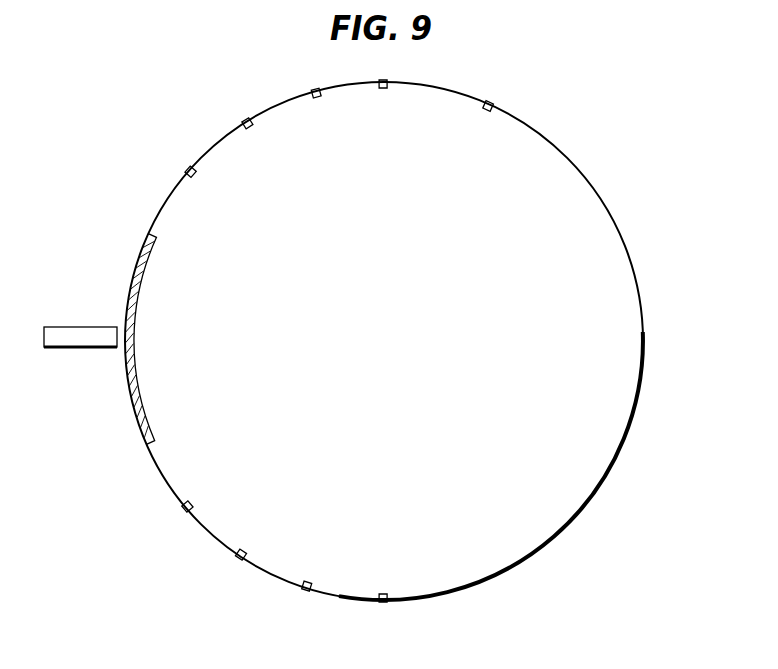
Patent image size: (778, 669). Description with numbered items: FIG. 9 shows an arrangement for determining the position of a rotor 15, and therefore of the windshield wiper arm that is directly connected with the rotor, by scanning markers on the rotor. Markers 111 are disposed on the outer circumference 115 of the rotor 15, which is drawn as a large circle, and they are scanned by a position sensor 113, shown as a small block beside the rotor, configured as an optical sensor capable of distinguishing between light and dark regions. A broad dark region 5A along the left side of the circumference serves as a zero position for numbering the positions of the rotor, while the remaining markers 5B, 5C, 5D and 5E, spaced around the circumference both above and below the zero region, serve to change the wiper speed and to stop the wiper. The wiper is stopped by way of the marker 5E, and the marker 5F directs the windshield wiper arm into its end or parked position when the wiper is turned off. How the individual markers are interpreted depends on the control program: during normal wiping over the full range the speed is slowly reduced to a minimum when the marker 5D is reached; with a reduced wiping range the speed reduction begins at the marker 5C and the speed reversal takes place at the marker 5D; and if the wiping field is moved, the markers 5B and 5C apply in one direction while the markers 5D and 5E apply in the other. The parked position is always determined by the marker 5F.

The rotor 15 is at (599, 177).
The outer circumference 115 is at (621, 448).
The broad dark region 5A is at (152, 339).
The marker 5B is at (207, 339).
The marker 5C is at (257, 339).
The marker 5D is at (318, 339).
The marker 5E is at (384, 341).
The marker 5F is at (483, 125).
The markers 111 is at (246, 122).
The position sensor 113 is at (73, 340).